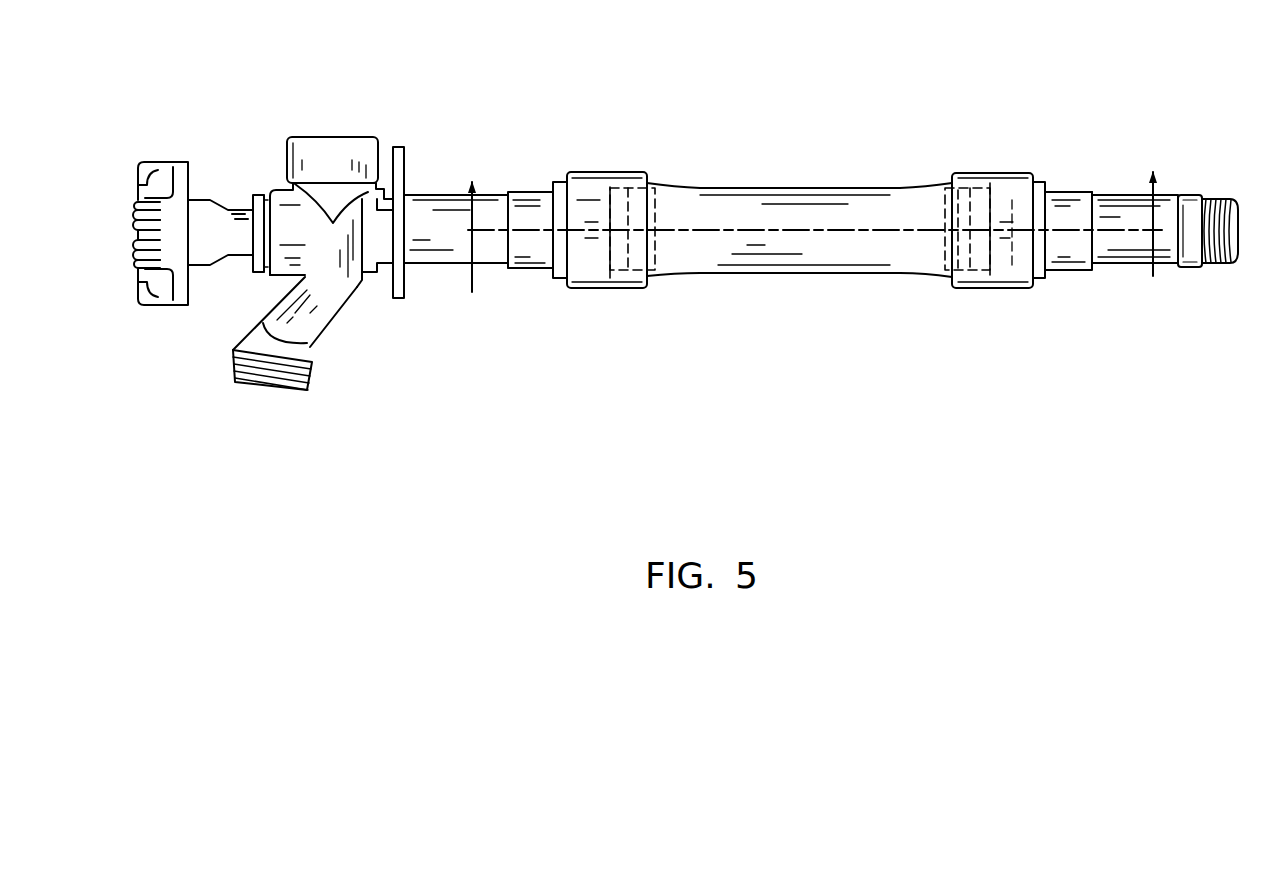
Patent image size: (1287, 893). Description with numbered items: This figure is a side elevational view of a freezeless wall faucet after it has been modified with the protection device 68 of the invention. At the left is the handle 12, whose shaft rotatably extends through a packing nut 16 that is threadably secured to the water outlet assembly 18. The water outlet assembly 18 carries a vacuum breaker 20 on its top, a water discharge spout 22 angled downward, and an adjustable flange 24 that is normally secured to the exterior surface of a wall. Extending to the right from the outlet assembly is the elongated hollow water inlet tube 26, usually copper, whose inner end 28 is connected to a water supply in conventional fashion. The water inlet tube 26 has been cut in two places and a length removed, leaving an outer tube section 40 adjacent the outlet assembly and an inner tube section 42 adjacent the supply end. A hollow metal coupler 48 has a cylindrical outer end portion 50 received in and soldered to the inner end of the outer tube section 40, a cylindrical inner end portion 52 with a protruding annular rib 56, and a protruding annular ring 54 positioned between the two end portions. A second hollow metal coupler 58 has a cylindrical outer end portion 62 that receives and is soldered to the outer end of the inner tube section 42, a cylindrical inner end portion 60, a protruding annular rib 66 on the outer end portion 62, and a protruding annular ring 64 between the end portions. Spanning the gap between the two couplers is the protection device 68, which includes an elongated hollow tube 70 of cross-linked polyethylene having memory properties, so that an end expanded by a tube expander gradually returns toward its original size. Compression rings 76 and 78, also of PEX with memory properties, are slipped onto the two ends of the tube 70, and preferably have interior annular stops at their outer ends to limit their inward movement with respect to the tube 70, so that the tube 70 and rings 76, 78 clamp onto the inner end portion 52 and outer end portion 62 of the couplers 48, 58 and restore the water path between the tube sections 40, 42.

The handle 12 is at (191, 146).
The packing nut 16 is at (251, 196).
The water outlet assembly 18 is at (251, 322).
The vacuum breaker 20 is at (321, 150).
The water discharge spout 22 is at (268, 388).
The adjustable flange 24 is at (407, 148).
The water inlet tube 26 is at (432, 180).
The inner end 28 is at (1237, 200).
The outer tube section 40 is at (438, 245).
The inner tube section 42 is at (1113, 248).
The hollow metal coupler 48 is at (534, 272).
The outer end portion 50 is at (580, 258).
The inner end portion 52 is at (525, 232).
The annular ring 54 is at (553, 182).
The annular rib 56 is at (613, 188).
The second hollow metal coupler 58 is at (1084, 205).
The inner end portion 60 is at (1020, 260).
The outer end portion 62 is at (1073, 253).
The annular ring 64 is at (1043, 180).
The annular rib 66 is at (968, 188).
The protection device 68 is at (879, 170).
The elongated hollow tube 70 is at (791, 185).
The compression ring 76 is at (597, 172).
The compression ring 78 is at (997, 172).